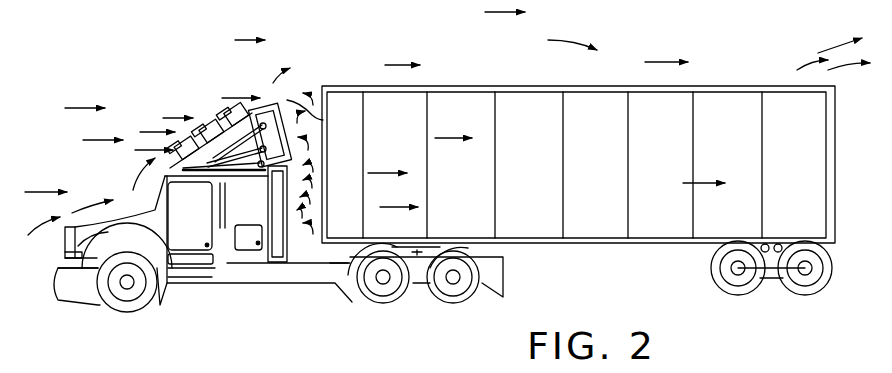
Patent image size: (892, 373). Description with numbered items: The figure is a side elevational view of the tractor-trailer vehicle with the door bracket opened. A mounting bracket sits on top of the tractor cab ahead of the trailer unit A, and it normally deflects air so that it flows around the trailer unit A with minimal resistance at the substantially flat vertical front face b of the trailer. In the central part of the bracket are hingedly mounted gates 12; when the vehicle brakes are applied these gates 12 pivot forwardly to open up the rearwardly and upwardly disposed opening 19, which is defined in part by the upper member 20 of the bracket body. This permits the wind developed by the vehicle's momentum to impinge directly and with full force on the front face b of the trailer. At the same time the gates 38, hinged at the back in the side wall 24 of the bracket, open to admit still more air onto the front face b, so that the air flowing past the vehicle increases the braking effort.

The hingedly mounted gates 12 is at (182, 138).
The opening 19 is at (196, 122).
The upper member 20 is at (270, 97).
The side wall 24 is at (299, 69).
The gates 38 is at (282, 132).
The trailer unit A is at (580, 222).
The front face b is at (345, 212).